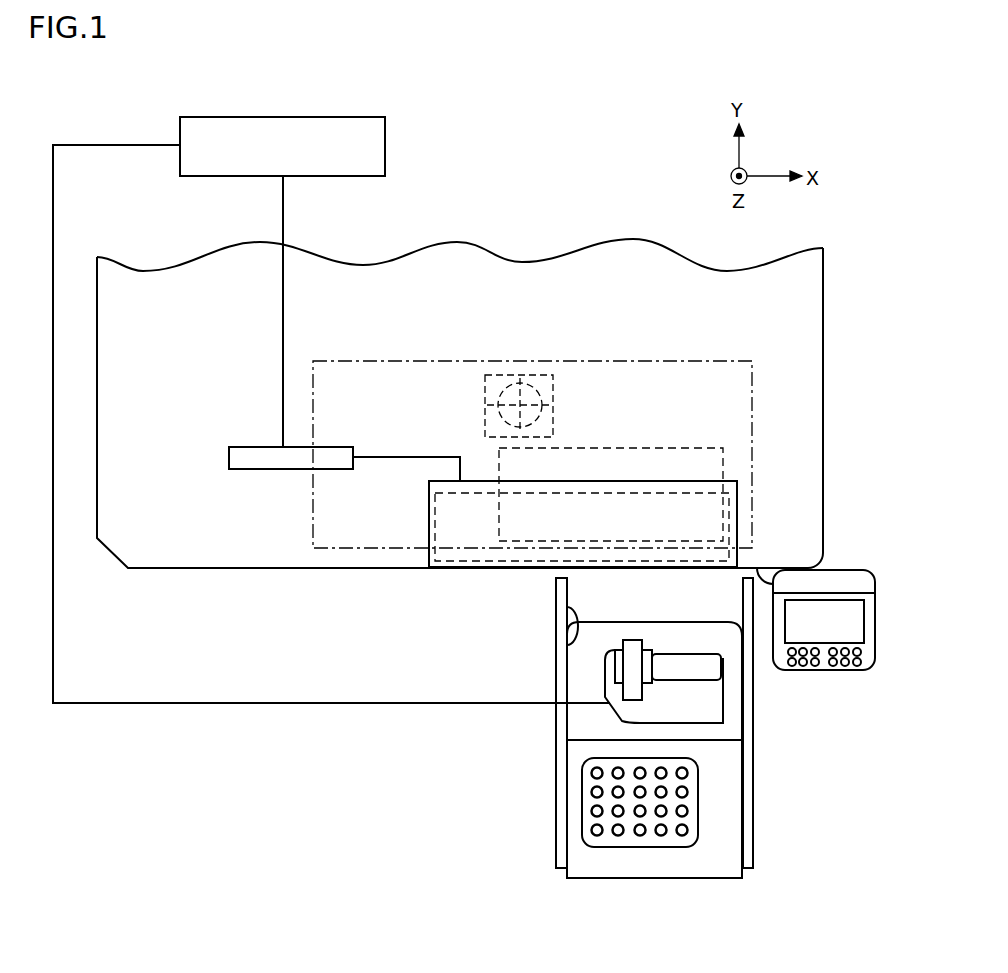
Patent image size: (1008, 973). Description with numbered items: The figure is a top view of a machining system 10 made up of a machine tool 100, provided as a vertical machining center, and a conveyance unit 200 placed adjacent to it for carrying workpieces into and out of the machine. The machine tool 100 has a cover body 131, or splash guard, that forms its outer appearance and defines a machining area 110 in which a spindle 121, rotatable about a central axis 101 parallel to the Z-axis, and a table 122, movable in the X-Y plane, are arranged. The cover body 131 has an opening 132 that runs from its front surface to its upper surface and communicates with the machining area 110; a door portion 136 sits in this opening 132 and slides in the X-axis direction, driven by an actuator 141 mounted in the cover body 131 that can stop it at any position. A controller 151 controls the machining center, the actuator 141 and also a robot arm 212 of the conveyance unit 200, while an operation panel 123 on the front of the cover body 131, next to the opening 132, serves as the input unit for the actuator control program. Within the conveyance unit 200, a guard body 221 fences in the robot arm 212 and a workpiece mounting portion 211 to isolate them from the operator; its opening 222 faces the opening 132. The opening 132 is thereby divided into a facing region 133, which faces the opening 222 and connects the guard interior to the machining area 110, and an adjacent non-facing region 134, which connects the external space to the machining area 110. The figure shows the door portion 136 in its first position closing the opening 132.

The machining system 10 is at (108, 118).
The controller 151 is at (322, 118).
The machine tool 100 is at (640, 222).
The spindle 121 is at (505, 393).
The central axis 101 is at (520, 405).
The machining area 110 is at (752, 373).
The table 122 is at (723, 457).
The door portion 136 is at (737, 507).
The opening 132 is at (560, 553).
The actuator 141 is at (261, 460).
The cover body 131 is at (360, 568).
The non-facing region 134 is at (552, 574).
The facing region 133 is at (737, 574).
The conveyance unit 200 is at (540, 868).
The guard body 221 is at (742, 745).
The opening of guard body 222 is at (577, 636).
The robot arm 212 is at (627, 710).
The workpiece mounting portion 211 is at (688, 820).
The operation panel 123 is at (825, 670).